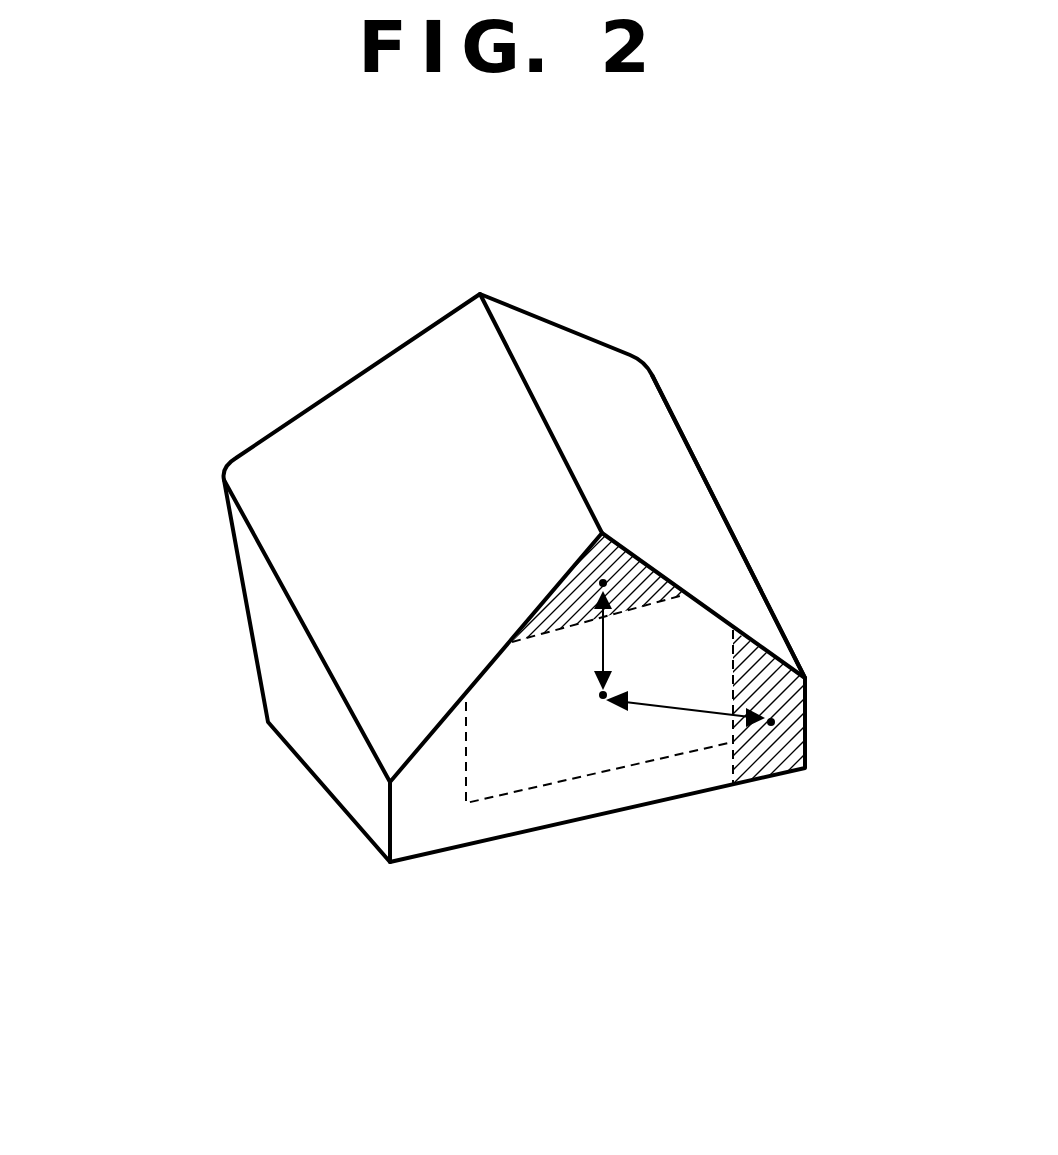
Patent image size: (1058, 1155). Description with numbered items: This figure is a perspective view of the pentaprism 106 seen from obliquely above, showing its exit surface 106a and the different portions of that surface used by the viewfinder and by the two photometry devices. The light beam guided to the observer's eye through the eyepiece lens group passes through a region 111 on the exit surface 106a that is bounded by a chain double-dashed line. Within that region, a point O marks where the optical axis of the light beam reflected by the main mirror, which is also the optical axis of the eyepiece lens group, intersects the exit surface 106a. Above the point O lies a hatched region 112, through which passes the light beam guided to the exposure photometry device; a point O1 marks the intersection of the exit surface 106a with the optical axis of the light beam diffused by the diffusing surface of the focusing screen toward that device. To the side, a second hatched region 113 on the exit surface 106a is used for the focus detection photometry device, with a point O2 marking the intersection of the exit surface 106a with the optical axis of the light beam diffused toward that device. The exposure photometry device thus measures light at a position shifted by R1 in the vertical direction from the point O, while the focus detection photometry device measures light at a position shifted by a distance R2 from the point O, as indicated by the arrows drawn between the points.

The pentaprism 106 is at (283, 678).
The exit surface 106a is at (448, 830).
The region 111 is at (690, 628).
The hatched region 112 is at (577, 597).
The hatched region 113 is at (770, 753).
The point O is at (601, 699).
The point O1 is at (603, 580).
The point O2 is at (773, 723).
The vertical shift R1 is at (607, 653).
The distance R2 is at (678, 710).